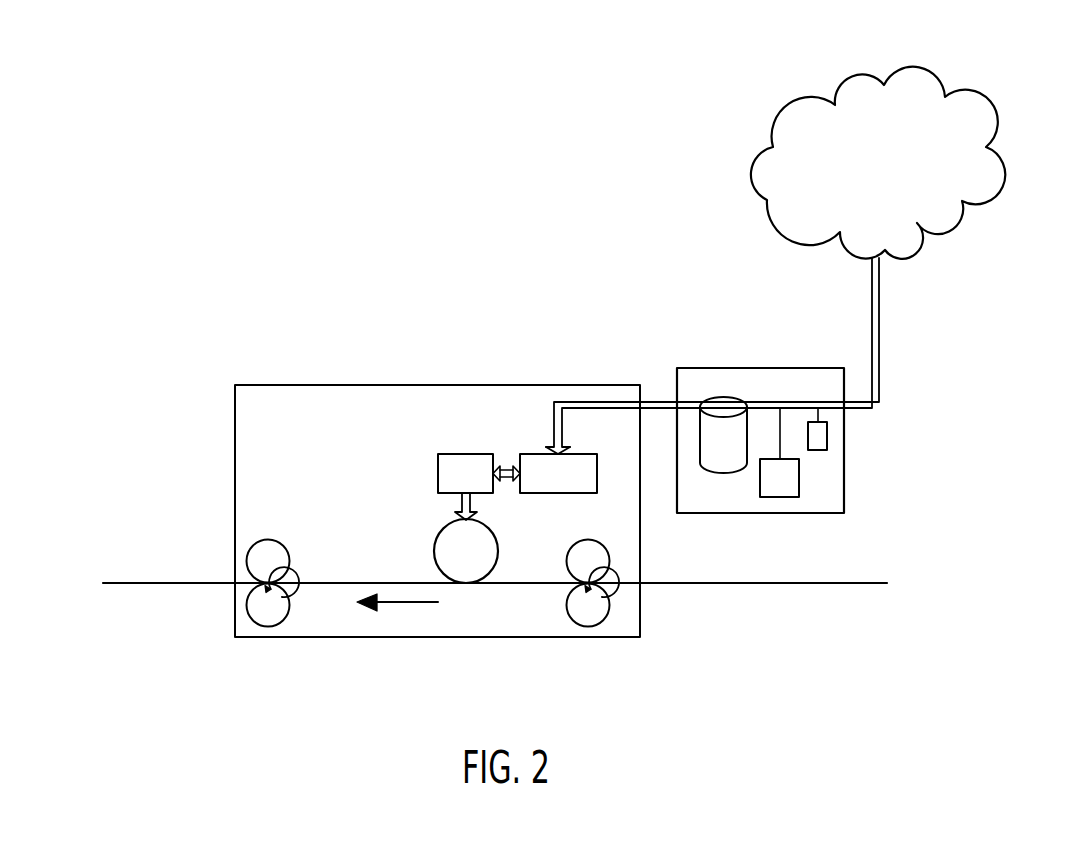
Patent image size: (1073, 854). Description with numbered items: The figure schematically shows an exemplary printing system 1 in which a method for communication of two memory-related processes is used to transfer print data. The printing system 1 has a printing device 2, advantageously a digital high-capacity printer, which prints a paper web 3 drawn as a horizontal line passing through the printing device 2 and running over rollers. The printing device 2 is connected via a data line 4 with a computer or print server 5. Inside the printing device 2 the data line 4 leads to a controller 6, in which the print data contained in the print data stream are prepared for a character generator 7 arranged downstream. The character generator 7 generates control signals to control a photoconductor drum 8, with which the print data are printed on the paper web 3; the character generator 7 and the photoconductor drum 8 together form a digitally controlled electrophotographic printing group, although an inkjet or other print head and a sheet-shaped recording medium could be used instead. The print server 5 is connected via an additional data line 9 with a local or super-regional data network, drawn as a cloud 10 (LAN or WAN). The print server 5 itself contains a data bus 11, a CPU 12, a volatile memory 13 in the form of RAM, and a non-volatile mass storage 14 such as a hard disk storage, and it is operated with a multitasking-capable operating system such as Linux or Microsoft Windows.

The printing system 1 is at (530, 165).
The printing device 2 is at (426, 368).
The paper web 3 is at (169, 585).
The data line 4 is at (655, 400).
The print server 5 is at (769, 367).
The controller 6 is at (532, 454).
The character generator 7 is at (438, 471).
The photoconductor drum 8 is at (474, 567).
The additional data line 9 is at (884, 322).
The network 10 is at (886, 180).
The data bus 11 is at (812, 400).
The CPU 12 is at (823, 442).
The volatile memory 13 is at (780, 497).
The non-volatile mass storage 14 is at (723, 458).